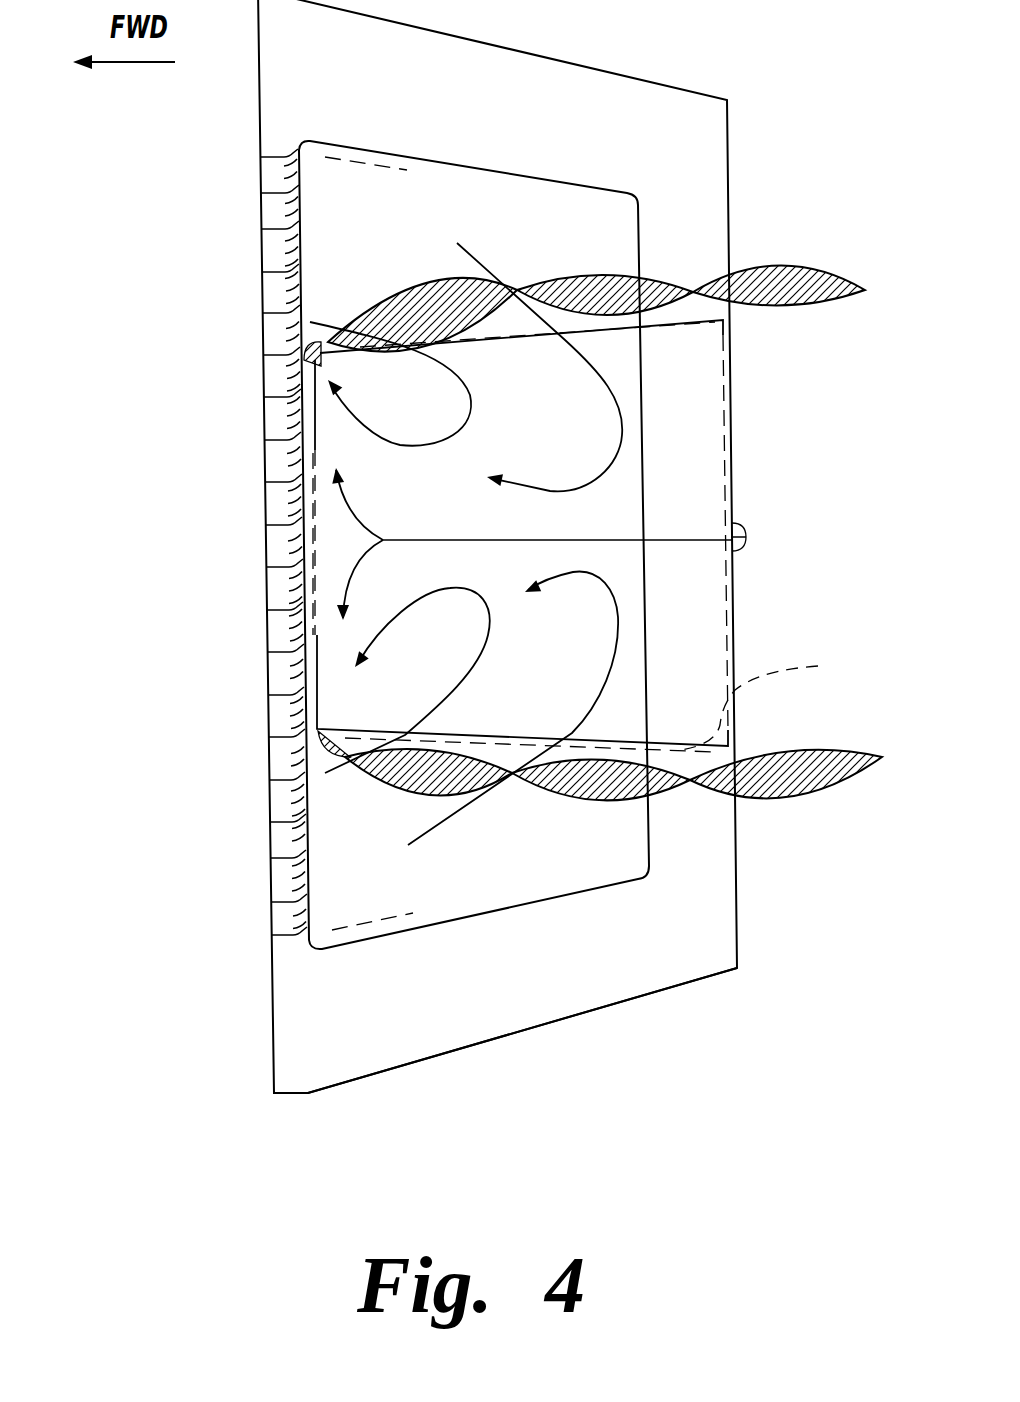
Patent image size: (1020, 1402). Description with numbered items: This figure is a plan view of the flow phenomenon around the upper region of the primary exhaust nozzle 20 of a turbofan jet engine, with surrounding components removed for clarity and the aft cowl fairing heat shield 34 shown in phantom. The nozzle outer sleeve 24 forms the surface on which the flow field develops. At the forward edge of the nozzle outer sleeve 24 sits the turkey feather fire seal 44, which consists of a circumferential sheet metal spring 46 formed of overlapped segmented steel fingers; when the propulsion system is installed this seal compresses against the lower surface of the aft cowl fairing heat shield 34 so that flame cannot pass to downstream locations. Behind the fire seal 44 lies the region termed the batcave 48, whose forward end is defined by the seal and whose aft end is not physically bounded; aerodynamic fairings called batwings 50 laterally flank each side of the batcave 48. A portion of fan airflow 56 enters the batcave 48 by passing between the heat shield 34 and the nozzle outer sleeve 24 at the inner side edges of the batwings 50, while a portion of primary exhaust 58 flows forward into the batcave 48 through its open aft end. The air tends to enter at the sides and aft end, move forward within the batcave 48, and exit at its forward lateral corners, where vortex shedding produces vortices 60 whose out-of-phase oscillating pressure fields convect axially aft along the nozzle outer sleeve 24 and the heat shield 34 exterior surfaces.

The primary exhaust nozzle 20 is at (740, 150).
The nozzle outer sleeve 24 is at (715, 923).
The aft cowl fairing heat shield 34 is at (769, 697).
The turkey feather fire seal 44 is at (273, 302).
The circumferential sheet metal spring 46 is at (290, 190).
The batcave 48 is at (705, 399).
The batwings 50 is at (478, 200).
The fan airflow 56 is at (618, 640).
The primary exhaust 58 is at (700, 538).
The vortices 60 is at (791, 276).